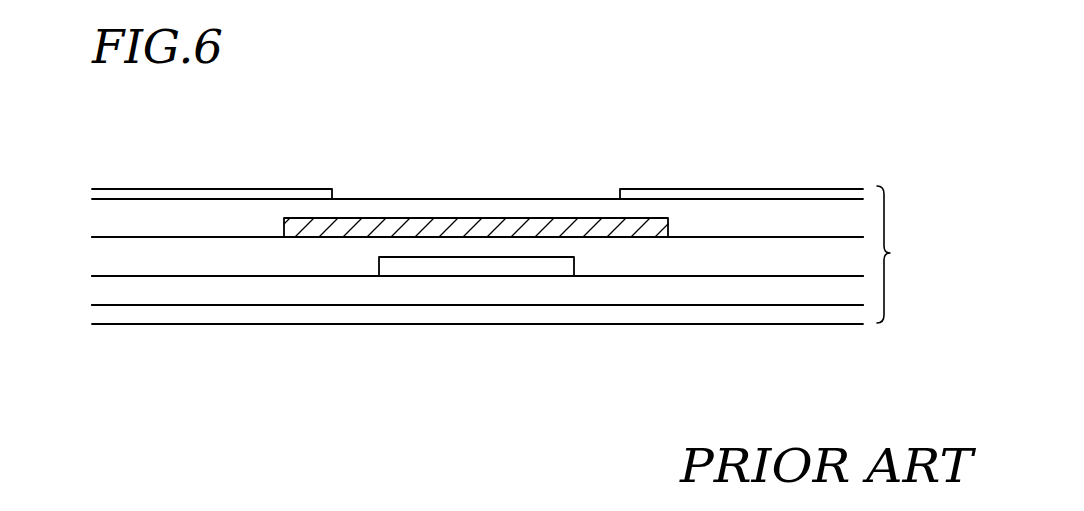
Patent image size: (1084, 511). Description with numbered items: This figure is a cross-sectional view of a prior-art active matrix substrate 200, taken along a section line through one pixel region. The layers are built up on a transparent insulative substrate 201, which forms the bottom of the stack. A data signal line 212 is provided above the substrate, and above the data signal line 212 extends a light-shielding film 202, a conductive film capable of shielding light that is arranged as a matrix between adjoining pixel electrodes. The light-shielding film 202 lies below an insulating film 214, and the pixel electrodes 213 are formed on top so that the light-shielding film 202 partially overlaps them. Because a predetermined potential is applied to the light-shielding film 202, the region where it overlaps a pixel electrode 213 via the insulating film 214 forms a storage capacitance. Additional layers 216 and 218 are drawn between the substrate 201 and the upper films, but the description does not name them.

The active matrix substrate 200 is at (516, 250).
The transparent insulative substrate 201 is at (518, 317).
The light-shielding film 202 is at (468, 225).
The data signal line 212 is at (403, 265).
The pixel electrode 213 is at (280, 188).
The insulating film 214 is at (568, 198).
The gate insulating layer 216 is at (808, 258).
The buffer layer 218 is at (693, 293).